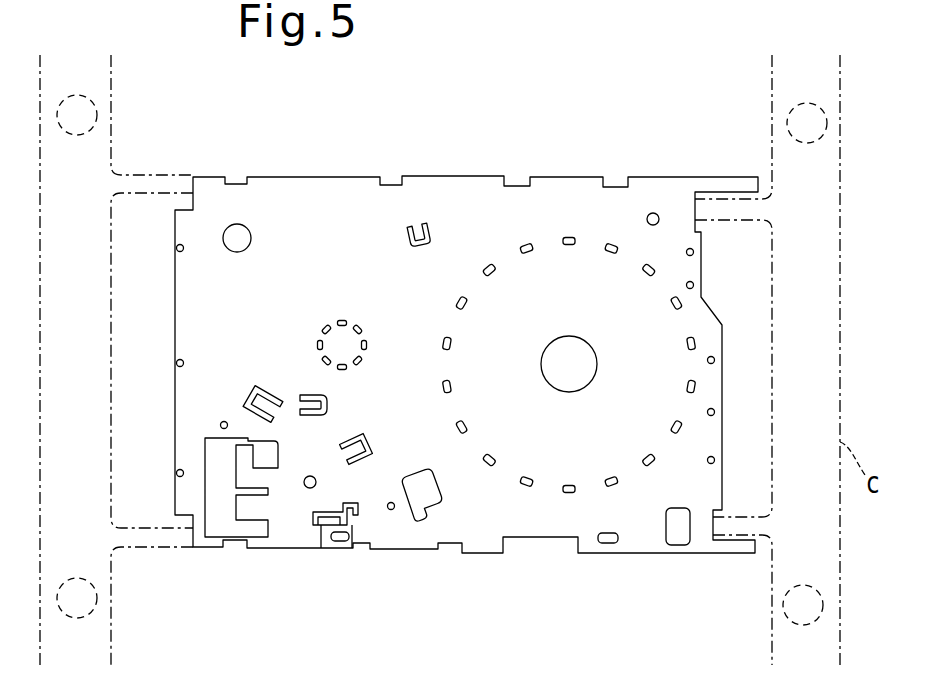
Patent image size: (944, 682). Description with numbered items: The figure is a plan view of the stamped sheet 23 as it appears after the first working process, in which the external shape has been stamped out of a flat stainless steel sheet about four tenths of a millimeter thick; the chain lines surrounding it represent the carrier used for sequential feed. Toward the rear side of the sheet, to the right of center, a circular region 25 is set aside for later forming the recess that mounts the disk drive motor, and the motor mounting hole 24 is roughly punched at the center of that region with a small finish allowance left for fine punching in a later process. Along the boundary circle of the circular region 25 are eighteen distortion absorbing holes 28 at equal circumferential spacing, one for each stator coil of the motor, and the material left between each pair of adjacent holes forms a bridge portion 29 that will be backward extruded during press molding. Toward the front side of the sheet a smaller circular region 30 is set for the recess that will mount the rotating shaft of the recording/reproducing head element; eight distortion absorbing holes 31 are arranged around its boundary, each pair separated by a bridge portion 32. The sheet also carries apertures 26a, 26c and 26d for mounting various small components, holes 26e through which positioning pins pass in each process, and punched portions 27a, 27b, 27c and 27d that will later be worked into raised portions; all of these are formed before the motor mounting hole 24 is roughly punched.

The stamped sheet 23 is at (485, 177).
The motor mounting hole 24 is at (575, 355).
The circular region 25 is at (653, 382).
The aperture 26a is at (243, 225).
The aperture 26c is at (425, 500).
The aperture 26d is at (212, 465).
The hole 26e is at (652, 212).
The punched portion 27a is at (427, 225).
The punched portion 27b is at (250, 392).
The punched portion 27c is at (321, 548).
The punched portion 27d is at (357, 440).
The distortion absorbing hole 28 is at (571, 235).
The bridge portion 29 is at (650, 265).
The circular region 30 is at (343, 340).
The distortion absorbing hole 31 is at (322, 326).
The bridge portion 32 is at (340, 318).